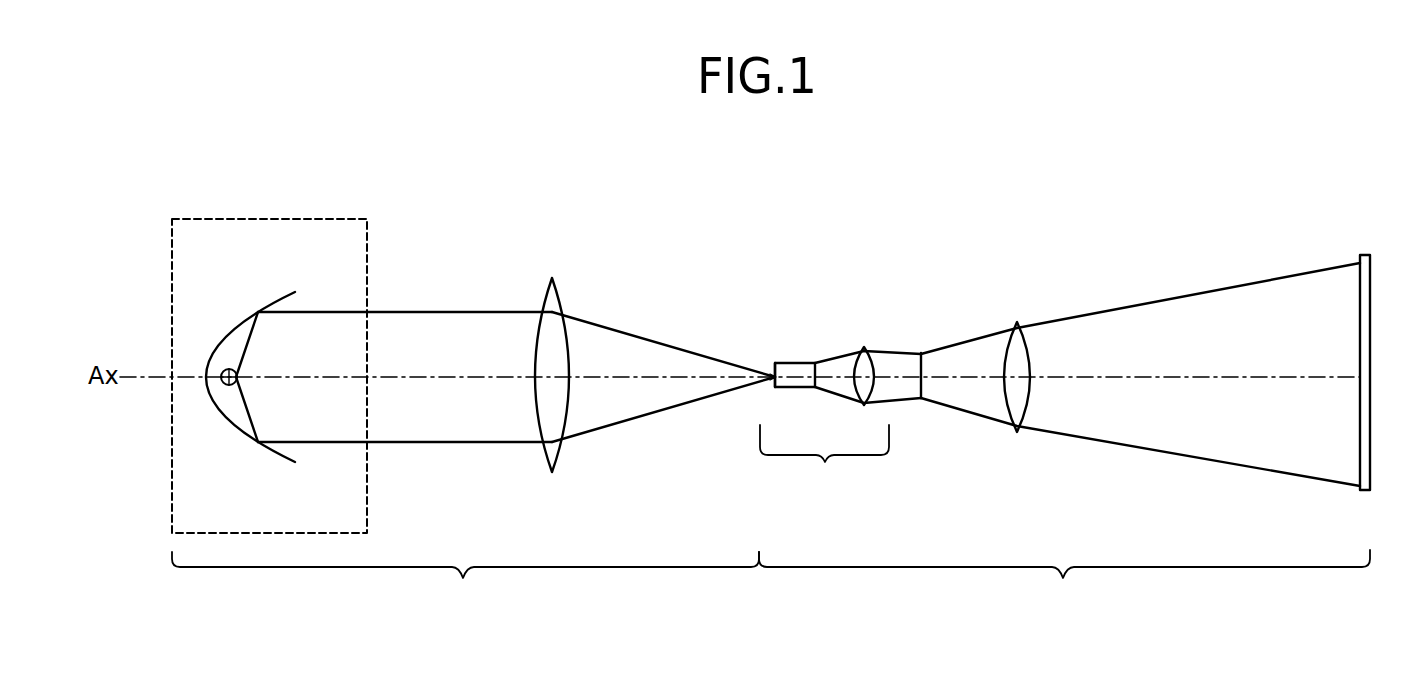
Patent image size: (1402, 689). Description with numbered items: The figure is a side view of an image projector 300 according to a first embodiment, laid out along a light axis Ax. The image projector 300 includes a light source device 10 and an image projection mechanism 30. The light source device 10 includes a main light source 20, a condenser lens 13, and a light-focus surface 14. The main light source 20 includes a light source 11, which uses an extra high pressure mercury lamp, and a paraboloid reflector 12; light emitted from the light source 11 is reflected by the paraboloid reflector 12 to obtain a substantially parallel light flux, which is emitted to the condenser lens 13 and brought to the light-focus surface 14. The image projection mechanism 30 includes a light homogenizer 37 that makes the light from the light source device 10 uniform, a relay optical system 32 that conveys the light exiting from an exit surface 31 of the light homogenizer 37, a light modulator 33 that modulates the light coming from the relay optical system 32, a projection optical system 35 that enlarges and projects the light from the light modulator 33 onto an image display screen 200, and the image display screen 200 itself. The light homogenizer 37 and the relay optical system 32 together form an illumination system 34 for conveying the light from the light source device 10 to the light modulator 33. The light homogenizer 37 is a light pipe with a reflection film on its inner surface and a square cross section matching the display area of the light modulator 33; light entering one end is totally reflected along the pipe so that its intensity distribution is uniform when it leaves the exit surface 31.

The light source device 10 is at (465, 584).
The light source 11 is at (237, 373).
The paraboloid reflector 12 is at (268, 306).
The condenser lens 13 is at (552, 278).
The light-focus surface 14 is at (773, 376).
The main light source 20 is at (323, 219).
The image projection mechanism 30 is at (1064, 582).
The exit surface 31 is at (815, 388).
The relay optical system 32 is at (864, 347).
The light modulator 33 is at (921, 399).
The illumination system 34 is at (824, 462).
The projection optical system 35 is at (1017, 322).
The light homogenizer 37 is at (795, 363).
The image display screen 200 is at (1365, 255).
The image projector 300 is at (1182, 181).